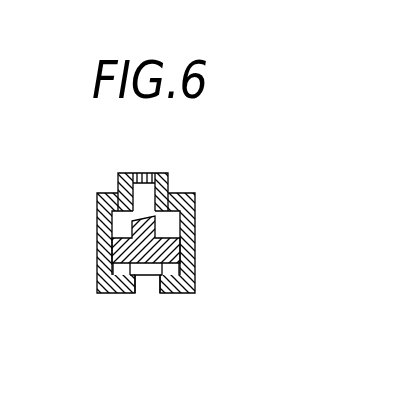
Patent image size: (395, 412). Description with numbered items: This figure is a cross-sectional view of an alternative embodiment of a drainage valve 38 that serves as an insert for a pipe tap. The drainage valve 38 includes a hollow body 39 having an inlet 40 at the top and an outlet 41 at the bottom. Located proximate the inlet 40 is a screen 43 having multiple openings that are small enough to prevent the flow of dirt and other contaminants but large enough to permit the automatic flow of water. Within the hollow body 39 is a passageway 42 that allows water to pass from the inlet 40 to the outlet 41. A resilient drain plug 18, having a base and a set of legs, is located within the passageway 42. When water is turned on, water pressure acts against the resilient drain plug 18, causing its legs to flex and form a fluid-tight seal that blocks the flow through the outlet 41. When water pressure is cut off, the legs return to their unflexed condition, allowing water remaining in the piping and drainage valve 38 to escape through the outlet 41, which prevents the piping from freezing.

The drainage valve 38 is at (203, 157).
The inlet 40 is at (118, 178).
The screen 43 is at (158, 177).
The passageway 42 is at (121, 227).
The resilient drain plug 18 is at (112, 258).
The hollow body 39 is at (188, 272).
The outlet 41 is at (145, 293).